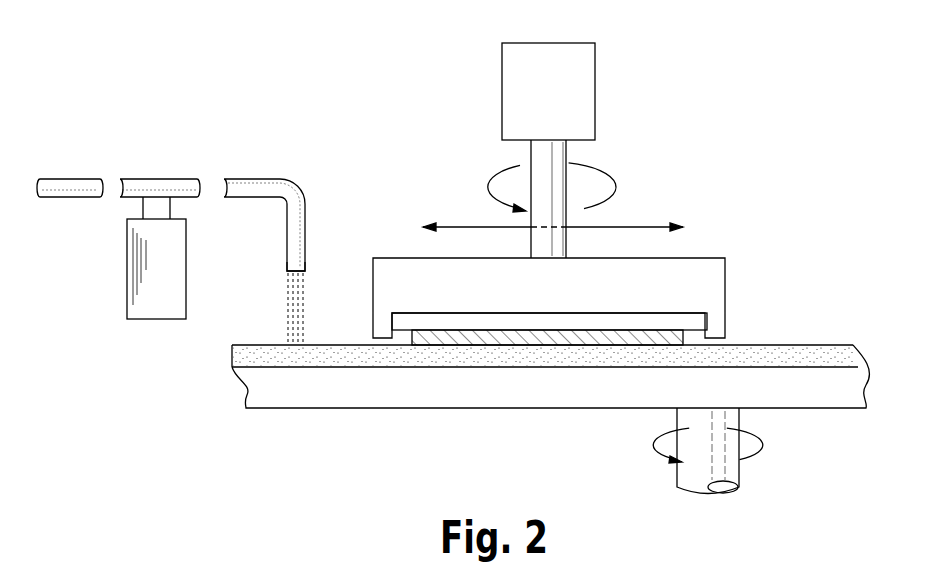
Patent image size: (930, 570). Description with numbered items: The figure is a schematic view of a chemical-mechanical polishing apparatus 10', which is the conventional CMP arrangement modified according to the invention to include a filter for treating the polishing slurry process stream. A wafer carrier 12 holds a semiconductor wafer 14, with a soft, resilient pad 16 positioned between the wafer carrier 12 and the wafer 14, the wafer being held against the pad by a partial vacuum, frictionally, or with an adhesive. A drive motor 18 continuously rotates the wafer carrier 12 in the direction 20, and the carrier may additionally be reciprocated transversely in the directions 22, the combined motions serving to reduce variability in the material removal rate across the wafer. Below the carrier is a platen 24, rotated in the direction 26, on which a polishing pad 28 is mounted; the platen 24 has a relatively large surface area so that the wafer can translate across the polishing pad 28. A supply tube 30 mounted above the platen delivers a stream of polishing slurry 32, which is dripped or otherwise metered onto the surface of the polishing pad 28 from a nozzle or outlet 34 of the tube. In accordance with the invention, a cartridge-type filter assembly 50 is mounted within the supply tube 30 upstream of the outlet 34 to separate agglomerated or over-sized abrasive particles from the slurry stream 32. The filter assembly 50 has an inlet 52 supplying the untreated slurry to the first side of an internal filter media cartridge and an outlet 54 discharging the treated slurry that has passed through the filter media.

The CMP apparatus 10' is at (786, 48).
The wafer carrier 12 is at (386, 287).
The semiconductor wafer 14 is at (545, 338).
The soft, resilient pad 16 is at (648, 317).
The drive motor 18 is at (595, 93).
The rotation direction 20 is at (600, 167).
The transverse reciprocation directions 22 is at (458, 227).
The platen 24 is at (858, 352).
The platen rotation direction 26 is at (748, 465).
The polishing pad 28 is at (772, 355).
The supply tube 30 is at (258, 180).
The polishing slurry stream 32 is at (287, 310).
The nozzle or outlet 34 is at (303, 273).
The filter assembly 50 is at (186, 243).
The inlet 52 is at (118, 189).
The outlet 54 is at (200, 185).